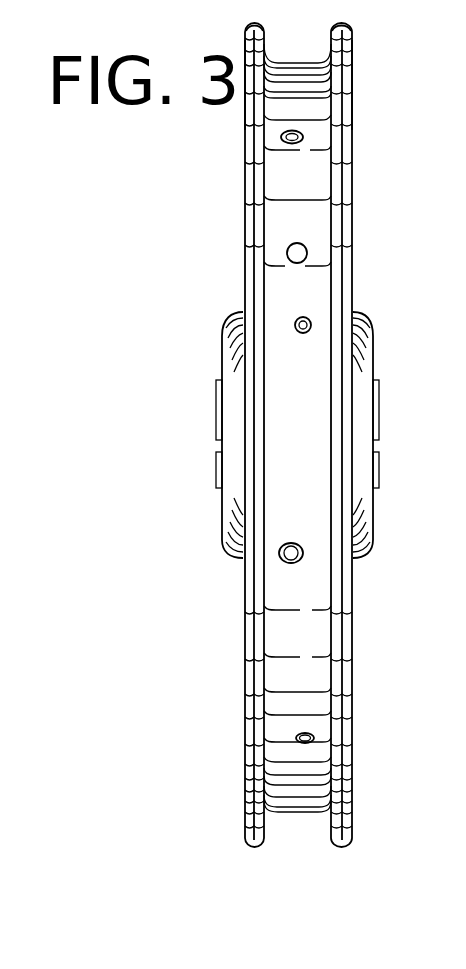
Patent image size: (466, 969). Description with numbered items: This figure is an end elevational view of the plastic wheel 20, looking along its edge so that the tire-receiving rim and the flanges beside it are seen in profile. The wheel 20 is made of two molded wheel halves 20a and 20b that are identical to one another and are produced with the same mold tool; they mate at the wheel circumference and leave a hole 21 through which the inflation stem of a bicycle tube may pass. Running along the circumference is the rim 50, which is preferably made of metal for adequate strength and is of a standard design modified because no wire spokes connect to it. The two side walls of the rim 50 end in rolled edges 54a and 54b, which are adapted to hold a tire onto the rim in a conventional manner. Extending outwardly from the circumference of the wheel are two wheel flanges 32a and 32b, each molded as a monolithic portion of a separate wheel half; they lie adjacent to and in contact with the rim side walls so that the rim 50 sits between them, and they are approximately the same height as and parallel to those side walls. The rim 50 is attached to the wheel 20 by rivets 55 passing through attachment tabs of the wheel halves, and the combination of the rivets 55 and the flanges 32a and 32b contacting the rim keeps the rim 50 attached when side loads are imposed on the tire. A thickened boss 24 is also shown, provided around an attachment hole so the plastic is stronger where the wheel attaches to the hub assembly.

The plastic wheel 20 is at (306, 435).
The first wheel half 20a is at (245, 272).
The second wheel half 20b is at (353, 282).
The hole 21 is at (306, 252).
The boss 24 is at (379, 392).
The first wheel flange 32a is at (243, 66).
The second wheel flange 32b is at (355, 60).
The rim 50 is at (305, 82).
The first rolled edge 54a is at (244, 25).
The second rolled edge 54b is at (353, 26).
The rivets 55 is at (282, 139).